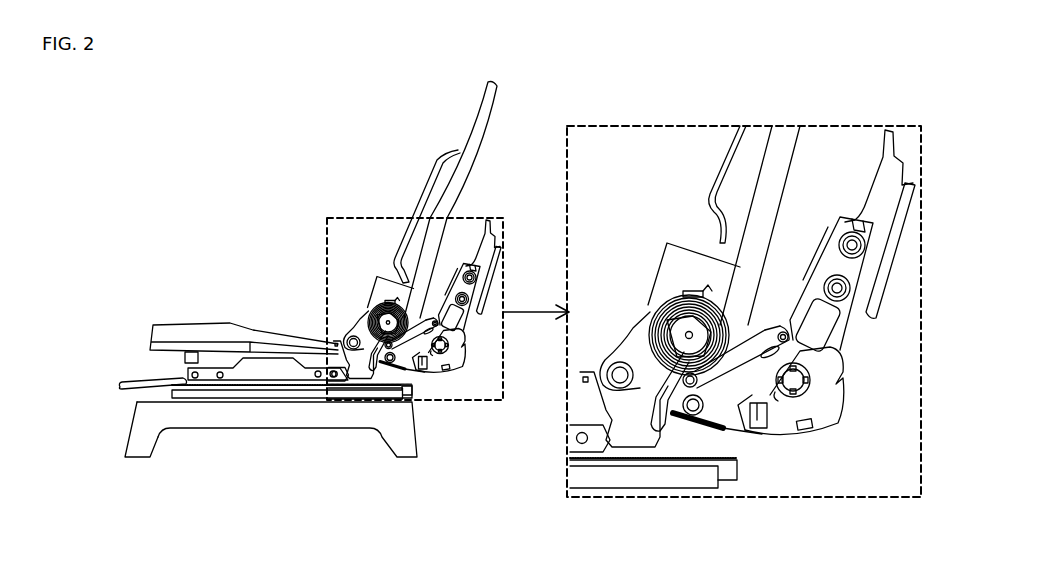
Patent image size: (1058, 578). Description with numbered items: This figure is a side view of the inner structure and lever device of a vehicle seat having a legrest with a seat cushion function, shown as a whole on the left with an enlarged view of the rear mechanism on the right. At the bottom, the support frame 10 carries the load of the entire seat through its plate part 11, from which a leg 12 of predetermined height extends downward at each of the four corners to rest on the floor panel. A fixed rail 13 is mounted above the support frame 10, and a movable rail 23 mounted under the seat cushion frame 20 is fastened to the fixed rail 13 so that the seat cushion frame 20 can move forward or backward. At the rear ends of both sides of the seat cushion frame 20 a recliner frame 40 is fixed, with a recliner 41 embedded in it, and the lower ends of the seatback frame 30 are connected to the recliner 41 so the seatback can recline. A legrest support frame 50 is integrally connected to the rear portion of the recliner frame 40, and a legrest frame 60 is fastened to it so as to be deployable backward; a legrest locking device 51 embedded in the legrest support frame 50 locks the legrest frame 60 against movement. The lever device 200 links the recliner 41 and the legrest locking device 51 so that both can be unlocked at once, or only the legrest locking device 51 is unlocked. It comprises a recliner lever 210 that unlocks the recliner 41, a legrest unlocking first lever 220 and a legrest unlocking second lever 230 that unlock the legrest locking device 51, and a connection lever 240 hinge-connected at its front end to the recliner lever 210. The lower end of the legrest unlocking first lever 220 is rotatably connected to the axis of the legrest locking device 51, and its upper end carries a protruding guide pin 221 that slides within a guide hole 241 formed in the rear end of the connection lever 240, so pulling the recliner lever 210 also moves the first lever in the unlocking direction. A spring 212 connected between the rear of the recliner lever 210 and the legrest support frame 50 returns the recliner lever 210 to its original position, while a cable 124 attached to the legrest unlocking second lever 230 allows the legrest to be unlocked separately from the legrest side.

The support frame 10 is at (243, 413).
The plate part 11 is at (308, 395).
The leg 12 is at (152, 445).
The fixed rail 13 is at (585, 482).
The seat cushion frame 20 is at (273, 332).
The movable rail 23 is at (727, 473).
The seatback frame 30 is at (470, 166).
The recliner frame 40 is at (640, 370).
The recliner 41 is at (677, 297).
The legrest support frame 50 is at (825, 410).
The legrest locking device 51 is at (805, 400).
The legrest frame 60 is at (885, 247).
The cable 124 is at (755, 412).
The lever device 200 is at (763, 325).
The recliner lever 210 is at (620, 443).
The spring 212 is at (687, 435).
The legrest unlocking first lever 220 is at (792, 352).
The guide pin 221 is at (790, 335).
The legrest unlocking second lever 230 is at (770, 400).
The connection lever 240 is at (733, 320).
The guide hole 241 is at (765, 320).